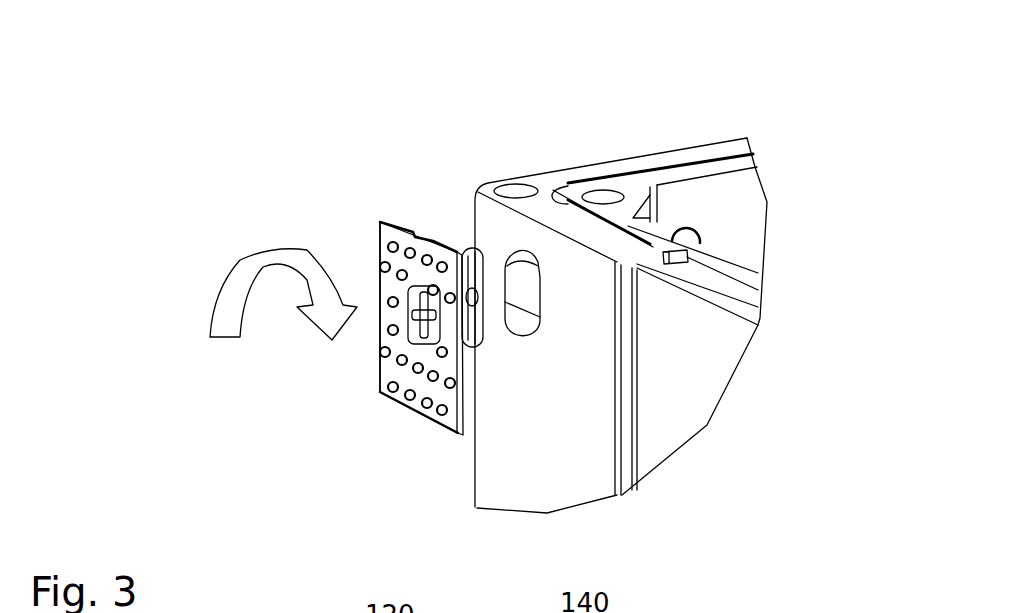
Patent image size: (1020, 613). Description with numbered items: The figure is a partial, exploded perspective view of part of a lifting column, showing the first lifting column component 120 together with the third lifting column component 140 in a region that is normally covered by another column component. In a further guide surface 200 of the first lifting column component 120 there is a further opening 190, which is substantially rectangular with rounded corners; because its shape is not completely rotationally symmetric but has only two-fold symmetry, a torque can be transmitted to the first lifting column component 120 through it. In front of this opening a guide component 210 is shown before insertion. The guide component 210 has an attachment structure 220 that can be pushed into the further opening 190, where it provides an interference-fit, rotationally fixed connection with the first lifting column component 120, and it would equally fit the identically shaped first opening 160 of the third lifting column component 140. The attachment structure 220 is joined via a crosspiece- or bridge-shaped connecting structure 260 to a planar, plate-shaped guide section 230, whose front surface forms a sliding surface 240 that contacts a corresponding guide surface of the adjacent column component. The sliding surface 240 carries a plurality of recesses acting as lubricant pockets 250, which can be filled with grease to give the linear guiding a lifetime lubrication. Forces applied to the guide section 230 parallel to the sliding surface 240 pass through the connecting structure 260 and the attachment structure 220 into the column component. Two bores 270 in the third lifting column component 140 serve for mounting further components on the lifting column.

The first lifting column component 120 is at (558, 188).
The third lifting column component 140 is at (688, 160).
The first opening 160 is at (655, 195).
The further opening 190 is at (527, 308).
The further guide surface 200 is at (470, 196).
The guide component 210 is at (380, 240).
The attachment structure 220 is at (484, 335).
The guide section 230 is at (458, 432).
The sliding surface 240 is at (397, 407).
The lubricant pockets 250 is at (380, 394).
The connecting structure 260 is at (393, 330).
The bores 270 is at (568, 184).